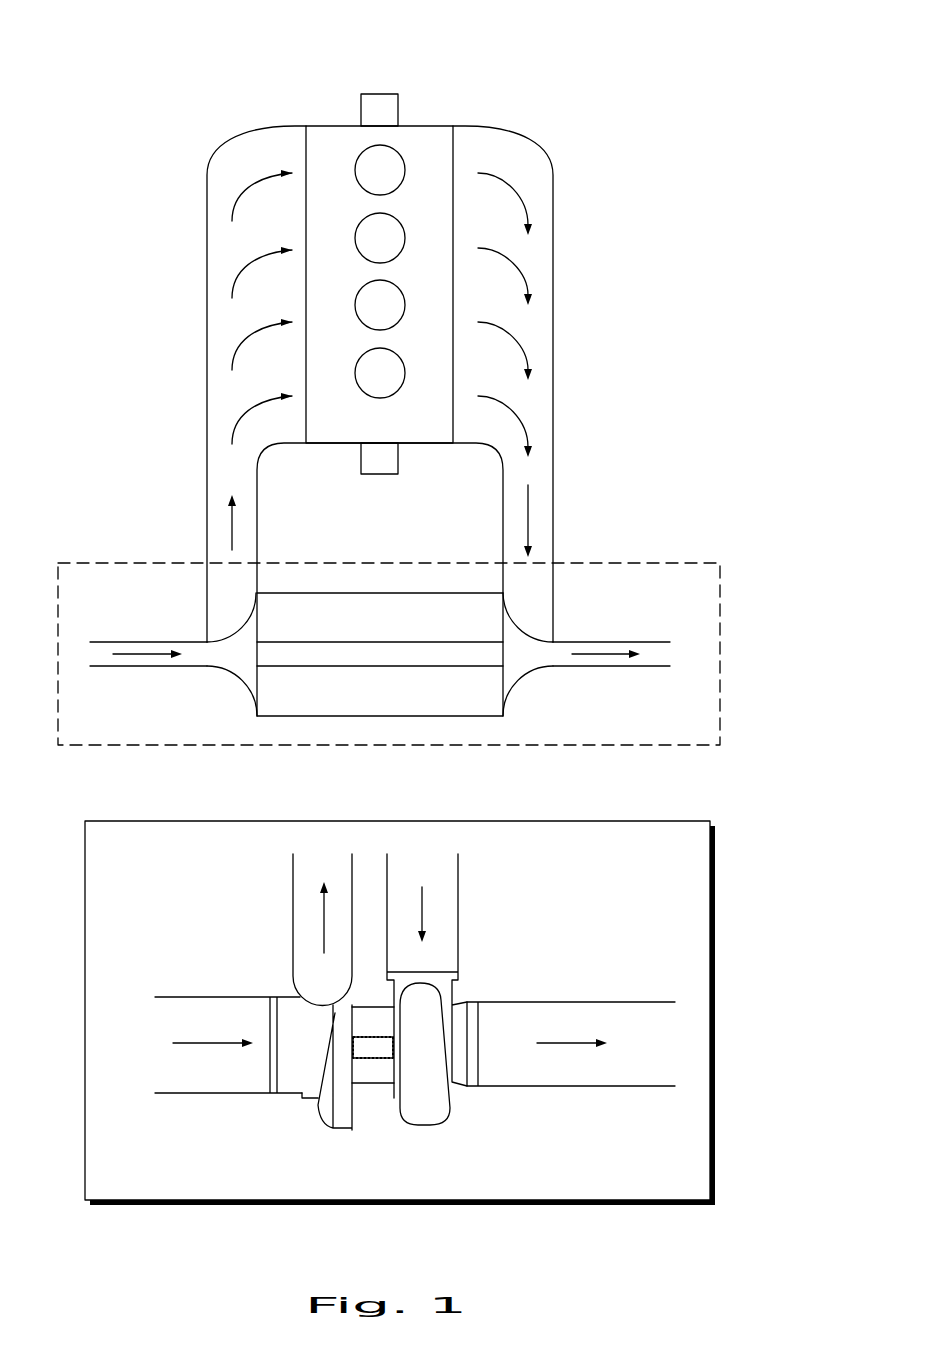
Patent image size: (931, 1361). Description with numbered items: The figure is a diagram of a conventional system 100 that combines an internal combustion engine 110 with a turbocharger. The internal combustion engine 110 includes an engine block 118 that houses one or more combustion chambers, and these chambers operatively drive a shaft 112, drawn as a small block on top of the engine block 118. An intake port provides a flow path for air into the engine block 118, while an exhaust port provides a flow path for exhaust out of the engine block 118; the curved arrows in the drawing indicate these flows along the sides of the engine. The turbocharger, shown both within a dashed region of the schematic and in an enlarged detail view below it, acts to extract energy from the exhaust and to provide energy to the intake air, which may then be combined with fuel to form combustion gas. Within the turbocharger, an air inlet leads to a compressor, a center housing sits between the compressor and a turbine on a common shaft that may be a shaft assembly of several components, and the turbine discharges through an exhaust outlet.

The conventional system 100 is at (545, 52).
The internal combustion engine 110 is at (342, 125).
The shaft 112 is at (382, 93).
The engine block 118 is at (398, 436).